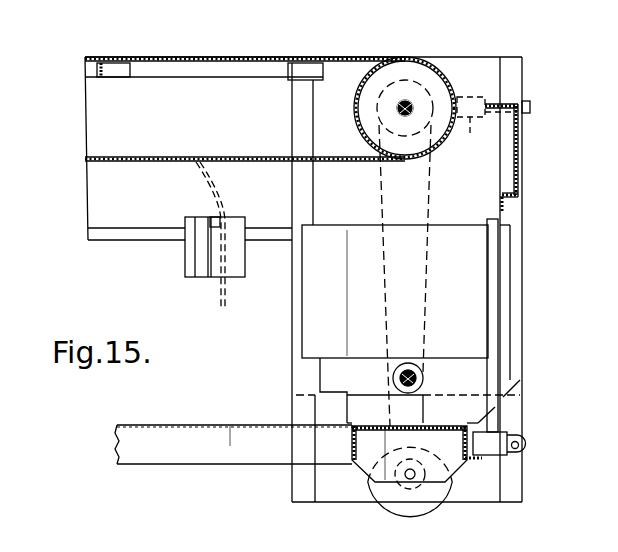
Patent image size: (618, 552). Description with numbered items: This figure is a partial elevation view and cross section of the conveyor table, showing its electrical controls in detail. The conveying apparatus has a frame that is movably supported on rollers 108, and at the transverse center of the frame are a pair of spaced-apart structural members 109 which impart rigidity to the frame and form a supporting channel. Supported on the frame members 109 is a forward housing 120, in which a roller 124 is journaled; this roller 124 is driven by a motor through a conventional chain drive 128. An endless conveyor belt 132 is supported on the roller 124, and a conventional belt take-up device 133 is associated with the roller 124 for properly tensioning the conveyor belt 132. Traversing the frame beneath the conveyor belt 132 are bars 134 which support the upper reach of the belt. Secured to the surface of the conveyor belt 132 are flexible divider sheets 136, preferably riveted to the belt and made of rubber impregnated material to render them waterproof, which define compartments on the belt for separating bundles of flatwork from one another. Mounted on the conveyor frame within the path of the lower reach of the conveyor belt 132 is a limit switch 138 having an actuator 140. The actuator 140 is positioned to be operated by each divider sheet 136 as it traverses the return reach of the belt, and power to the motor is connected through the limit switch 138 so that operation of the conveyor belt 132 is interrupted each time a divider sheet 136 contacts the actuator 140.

The roller 108 is at (410, 506).
The structural member 109 is at (188, 448).
The forward housing 120 is at (479, 62).
The roller 124 is at (422, 44).
The chain drive 128 is at (428, 213).
The conveyor belt 132 is at (113, 160).
The belt take-up device 133 is at (473, 118).
The bar 134 is at (105, 71).
The divider sheet 136 is at (224, 280).
The limit switch 138 is at (190, 253).
The actuator 140 is at (213, 218).